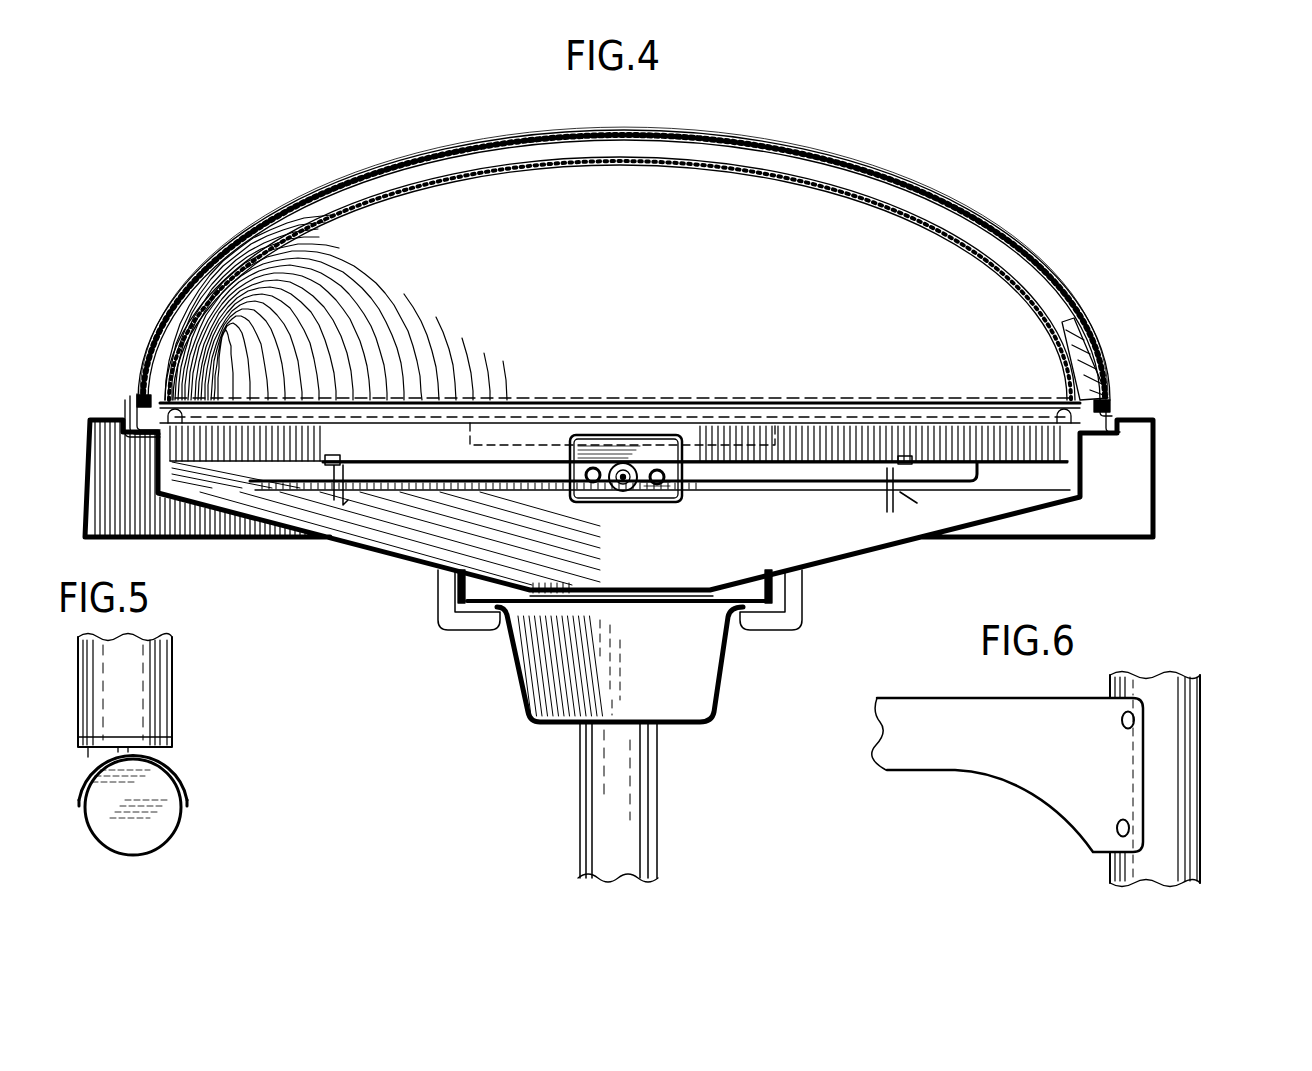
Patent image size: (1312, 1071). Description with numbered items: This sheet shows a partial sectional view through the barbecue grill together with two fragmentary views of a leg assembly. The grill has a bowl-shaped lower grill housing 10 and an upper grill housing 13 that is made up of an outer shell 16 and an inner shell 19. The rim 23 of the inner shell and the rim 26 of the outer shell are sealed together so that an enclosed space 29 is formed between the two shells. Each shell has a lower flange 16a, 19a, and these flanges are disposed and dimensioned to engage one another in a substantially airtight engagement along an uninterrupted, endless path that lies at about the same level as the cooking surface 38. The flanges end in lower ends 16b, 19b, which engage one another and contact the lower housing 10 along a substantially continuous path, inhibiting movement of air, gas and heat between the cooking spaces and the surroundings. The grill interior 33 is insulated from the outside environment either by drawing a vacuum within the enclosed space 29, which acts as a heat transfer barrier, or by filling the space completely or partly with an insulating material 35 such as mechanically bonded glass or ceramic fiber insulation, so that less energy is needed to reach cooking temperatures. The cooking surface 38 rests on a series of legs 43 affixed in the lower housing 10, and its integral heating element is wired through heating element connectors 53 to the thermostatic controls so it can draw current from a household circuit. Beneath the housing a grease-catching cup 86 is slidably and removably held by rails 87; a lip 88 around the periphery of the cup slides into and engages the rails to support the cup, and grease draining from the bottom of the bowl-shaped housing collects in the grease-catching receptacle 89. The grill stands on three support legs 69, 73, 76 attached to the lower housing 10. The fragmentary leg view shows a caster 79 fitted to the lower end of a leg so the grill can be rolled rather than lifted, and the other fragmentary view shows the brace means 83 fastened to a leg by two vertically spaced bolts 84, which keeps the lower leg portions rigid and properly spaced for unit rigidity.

In FIG. 4, the lower grill housing 10 is at (908, 547).
In FIG. 4, the upper grill housing 13 is at (624, 249).
In FIG. 4, the outer shell 16 is at (904, 181).
In FIG. 4, the lower flange of outer shell 16a is at (1117, 405).
In FIG. 4, the lower end of outer shell flange 16b is at (128, 412).
In FIG. 4, the inner shell 19 is at (762, 160).
In FIG. 4, the lower flange of inner shell 19a is at (1115, 433).
In FIG. 4, the lower end of inner shell flange 19b is at (135, 438).
In FIG. 4, the rim of inner shell 23 is at (148, 386).
In FIG. 4, the rim of outer shell 26 is at (134, 397).
In FIG. 4, the enclosed space 29 is at (246, 248).
In FIG. 4, the grill interior 33 is at (410, 210).
In FIG. 4, the insulating material 35 is at (1105, 360).
In FIG. 4, the cooking surface 38 is at (899, 396).
In FIG. 4, the legs 43 is at (340, 452).
In FIG. 4, the heating element connectors 53 is at (657, 469).
In FIG. 4, the support leg 69 is at (650, 812).
In FIG. 5, the support leg 69 is at (189, 696).
In FIG. 6, the support leg 69 is at (1199, 779).
In FIG. 5, the support leg 73 is at (189, 696).
In FIG. 6, the support leg 73 is at (1199, 779).
In FIG. 5, the support leg 76 is at (150, 703).
In FIG. 6, the support leg 76 is at (1177, 775).
In FIG. 5, the caster 79 is at (165, 808).
In FIG. 6, the brace means 83 is at (988, 775).
In FIG. 6, the bolts 84 is at (1117, 826).
In FIG. 4, the grease-catching cup 86 is at (630, 669).
In FIG. 4, the rails 87 is at (456, 626).
In FIG. 4, the lip 88 is at (458, 585).
In FIG. 4, the grease-catching receptacle 89 is at (538, 705).